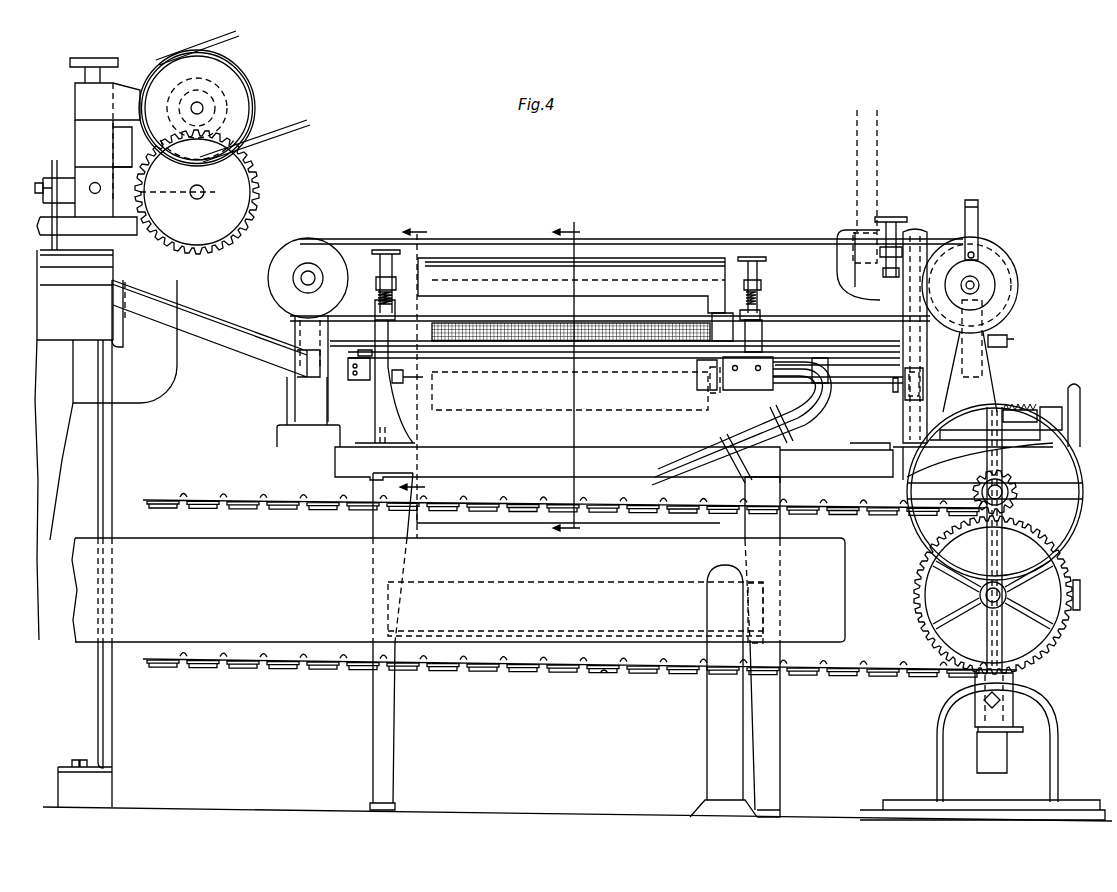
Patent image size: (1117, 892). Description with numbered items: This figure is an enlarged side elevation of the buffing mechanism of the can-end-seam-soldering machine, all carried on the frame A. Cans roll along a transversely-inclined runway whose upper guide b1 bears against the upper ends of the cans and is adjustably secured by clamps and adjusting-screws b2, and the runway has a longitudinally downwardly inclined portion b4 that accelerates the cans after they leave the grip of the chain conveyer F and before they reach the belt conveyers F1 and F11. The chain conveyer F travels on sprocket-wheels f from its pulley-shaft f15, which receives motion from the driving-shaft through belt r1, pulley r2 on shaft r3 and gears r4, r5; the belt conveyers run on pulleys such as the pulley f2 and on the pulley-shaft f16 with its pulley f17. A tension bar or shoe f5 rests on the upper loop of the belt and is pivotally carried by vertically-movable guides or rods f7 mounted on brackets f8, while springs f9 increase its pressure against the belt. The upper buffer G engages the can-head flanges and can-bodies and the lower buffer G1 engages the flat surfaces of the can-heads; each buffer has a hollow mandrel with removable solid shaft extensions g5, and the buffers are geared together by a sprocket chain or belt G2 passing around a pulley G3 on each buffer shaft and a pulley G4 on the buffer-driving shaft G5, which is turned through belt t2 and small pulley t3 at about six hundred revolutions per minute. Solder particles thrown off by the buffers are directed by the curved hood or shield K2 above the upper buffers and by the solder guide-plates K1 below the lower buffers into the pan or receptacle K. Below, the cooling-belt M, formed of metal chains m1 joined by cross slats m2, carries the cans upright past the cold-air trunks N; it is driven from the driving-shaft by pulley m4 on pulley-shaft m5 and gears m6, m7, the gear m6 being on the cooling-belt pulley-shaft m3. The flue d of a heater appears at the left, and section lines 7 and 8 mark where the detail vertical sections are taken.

The communicating flue d is at (106, 432).
The belt r1 is at (236, 35).
The pulley r2 is at (245, 85).
The shaft r3 is at (195, 105).
The gear r4 is at (225, 107).
The gear r5 is at (258, 207).
The sprocket-wheel f is at (255, 183).
The pulley-shaft f15 is at (188, 192).
The belt pulley f2 is at (338, 243).
The tension bar or shoe f5 is at (482, 318).
The vertically-movable guides or rods f7 is at (375, 255).
The bracket f8 is at (376, 282).
The spring f9 is at (378, 297).
The pulley-shaft f16 is at (985, 286).
The drive wheel f17 is at (998, 255).
The upper guide b1 is at (373, 355).
The clamps and adjusting-screws b2 is at (362, 380).
The downwardly inclined portion b4 is at (222, 340).
The solid shaft extension g5 is at (420, 382).
The endless conveyer F is at (820, 412).
The endless conveyer F1 is at (805, 316).
The endless conveyer F11 is at (645, 240).
The cylindric buffer G is at (712, 330).
The cylindric buffer G1 is at (620, 408).
The sprocket chain or belt G2 is at (918, 340).
The pulley G3 is at (900, 330).
The pulley G4 is at (912, 232).
The buffer-driving shaft G5 is at (945, 235).
The pan or receptacle K is at (605, 580).
The solder guide-plate K1 is at (615, 388).
The curved hood or shield K2 is at (690, 258).
The cooling-belt M is at (478, 672).
The metal chain m1 is at (870, 514).
The cross slat m2 is at (207, 498).
The pulley-shaft m3 is at (1008, 597).
The pulley m4 is at (1075, 470).
The pulley-shaft m5 is at (1010, 498).
The gear m6 is at (915, 583).
The gear m7 is at (1022, 492).
The cold-air trunk N is at (458, 590).
The frame A is at (108, 455).
The belt t2 is at (878, 171).
The small pulley t3 is at (855, 232).
The section line 7 7 is at (566, 374).
The section line 8 8 is at (413, 373).